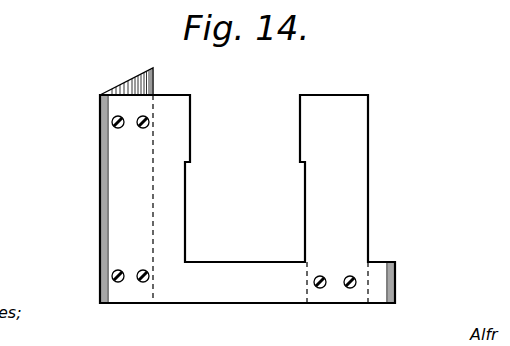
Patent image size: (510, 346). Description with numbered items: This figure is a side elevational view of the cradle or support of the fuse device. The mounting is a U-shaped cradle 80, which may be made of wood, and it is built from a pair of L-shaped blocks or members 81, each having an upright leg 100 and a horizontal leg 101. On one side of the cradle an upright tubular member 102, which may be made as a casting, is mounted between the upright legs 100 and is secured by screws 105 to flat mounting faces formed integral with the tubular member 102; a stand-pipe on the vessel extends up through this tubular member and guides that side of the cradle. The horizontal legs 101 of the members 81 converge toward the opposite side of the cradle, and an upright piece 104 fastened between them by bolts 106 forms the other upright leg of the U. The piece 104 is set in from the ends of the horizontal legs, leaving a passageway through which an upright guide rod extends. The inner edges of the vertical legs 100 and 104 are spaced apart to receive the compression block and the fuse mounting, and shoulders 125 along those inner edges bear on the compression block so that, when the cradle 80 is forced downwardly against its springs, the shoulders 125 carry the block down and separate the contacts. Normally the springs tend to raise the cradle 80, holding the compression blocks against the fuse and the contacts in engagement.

The U-shaped cradle 80 is at (378, 171).
The L-shaped blocks or members 81 is at (195, 205).
The upright legs 100 is at (175, 102).
The horizontal legs 101 is at (242, 290).
The upright tubular member 102 is at (105, 194).
The upright piece 104 is at (355, 218).
The screws 105 is at (119, 282).
The bolts 106 is at (323, 288).
The shoulders 125 is at (300, 165).